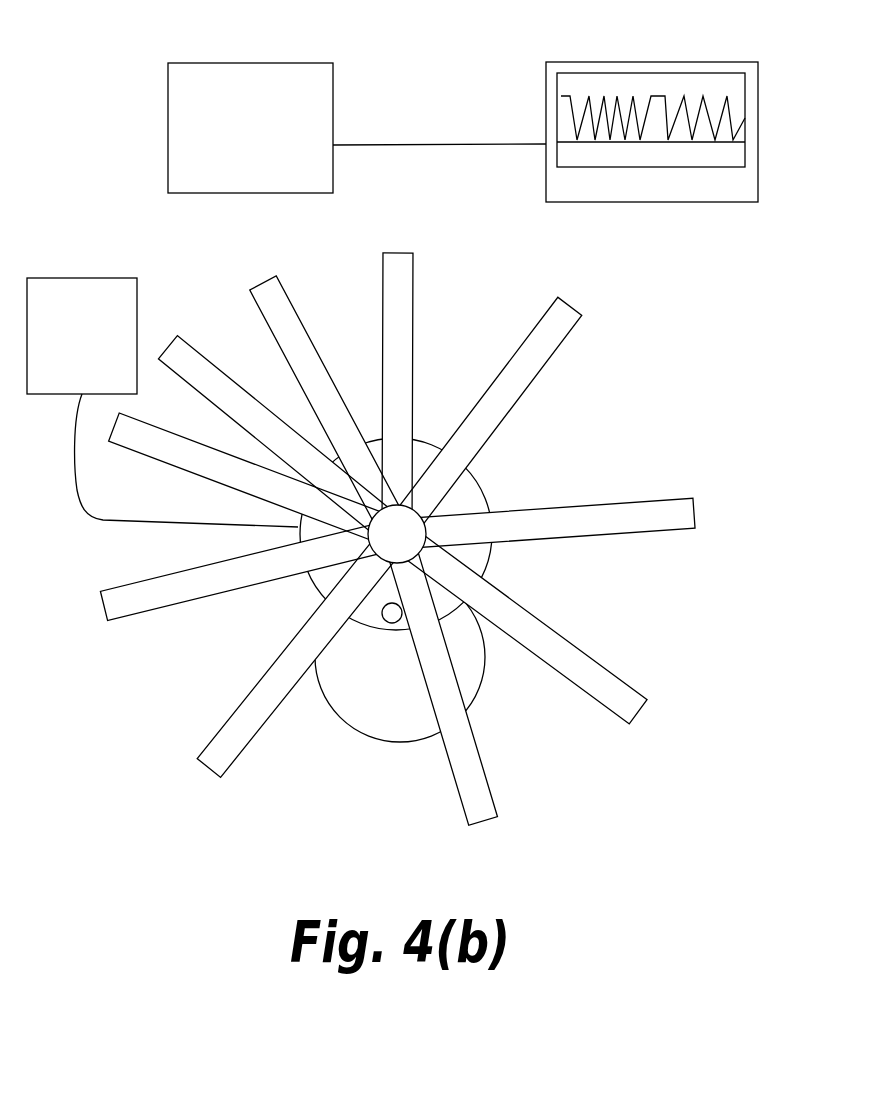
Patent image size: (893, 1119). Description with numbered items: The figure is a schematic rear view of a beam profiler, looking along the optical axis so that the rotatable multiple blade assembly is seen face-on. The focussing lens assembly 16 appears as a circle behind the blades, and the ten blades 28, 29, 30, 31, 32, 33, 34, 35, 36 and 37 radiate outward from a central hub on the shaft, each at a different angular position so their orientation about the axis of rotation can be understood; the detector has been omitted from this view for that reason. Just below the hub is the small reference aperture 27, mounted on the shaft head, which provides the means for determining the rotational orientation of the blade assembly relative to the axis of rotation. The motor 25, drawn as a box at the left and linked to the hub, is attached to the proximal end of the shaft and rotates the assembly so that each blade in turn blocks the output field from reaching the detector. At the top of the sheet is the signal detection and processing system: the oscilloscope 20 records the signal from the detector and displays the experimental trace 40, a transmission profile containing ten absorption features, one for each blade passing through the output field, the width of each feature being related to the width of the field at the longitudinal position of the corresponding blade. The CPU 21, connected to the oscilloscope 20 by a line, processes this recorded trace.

The focussing lens assembly 16 is at (335, 713).
The oscilloscope 20 is at (679, 151).
The CPU 21 is at (250, 128).
The motor 25 is at (162, 402).
The reference aperture 27 is at (395, 623).
The blade 28 is at (277, 293).
The blade 29 is at (182, 355).
The blade 30 is at (133, 443).
The blade 31 is at (132, 597).
The blade 32 is at (228, 735).
The blade 33 is at (480, 778).
The blade 34 is at (620, 687).
The blade 35 is at (673, 498).
The blade 36 is at (552, 340).
The blade 37 is at (403, 282).
The experimental trace 40 is at (657, 95).